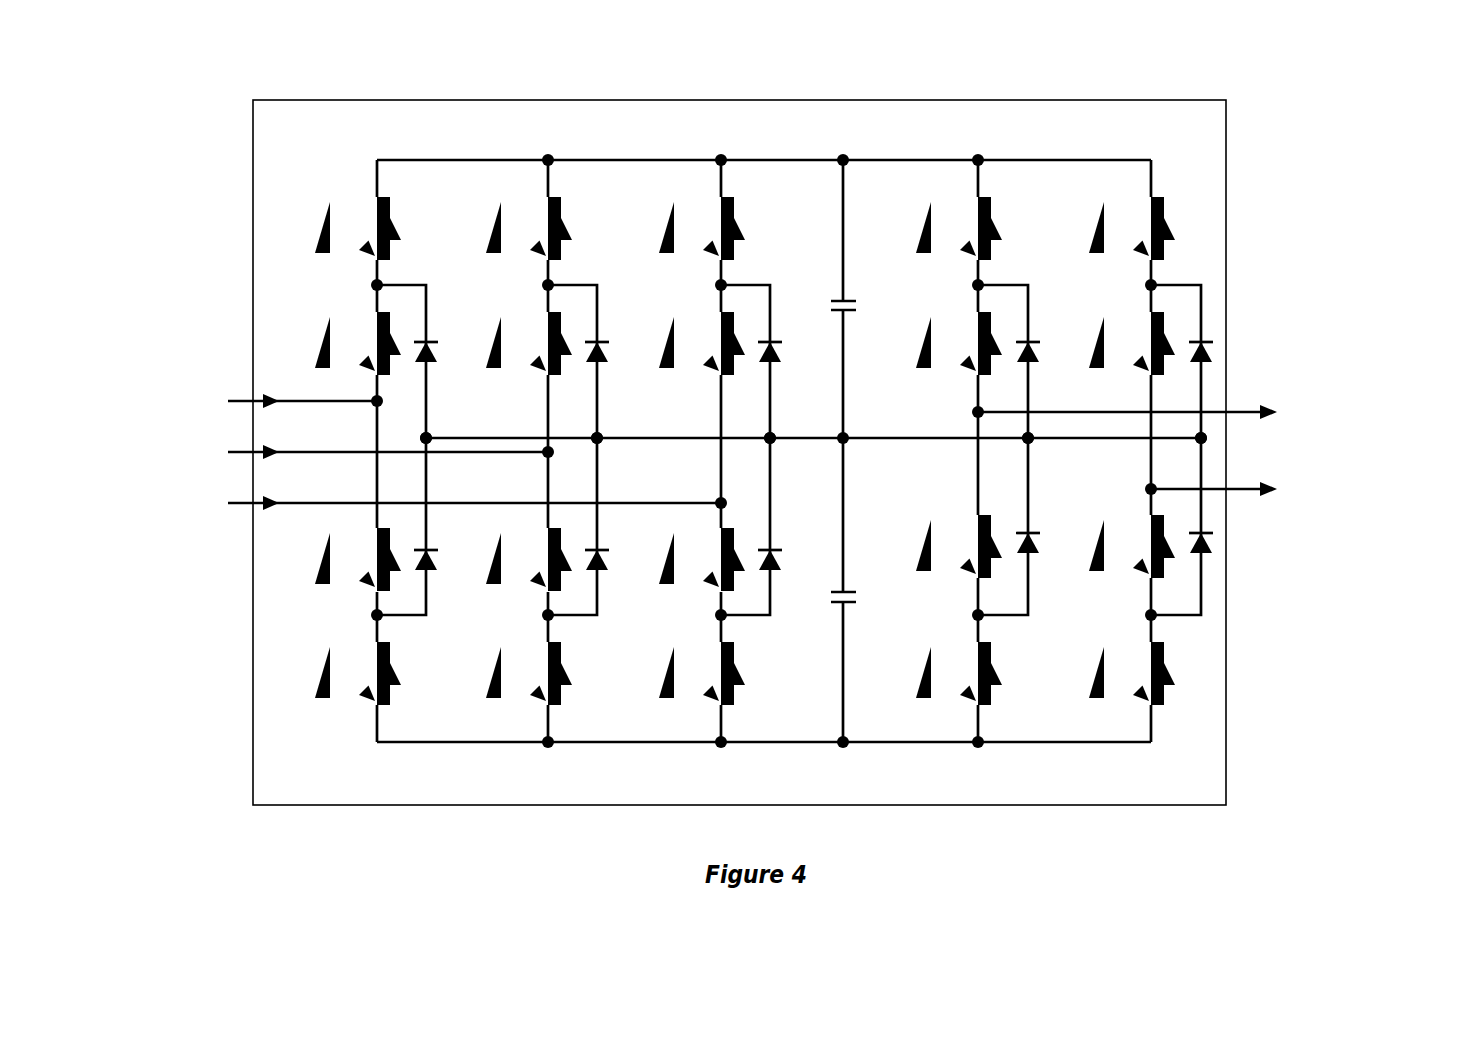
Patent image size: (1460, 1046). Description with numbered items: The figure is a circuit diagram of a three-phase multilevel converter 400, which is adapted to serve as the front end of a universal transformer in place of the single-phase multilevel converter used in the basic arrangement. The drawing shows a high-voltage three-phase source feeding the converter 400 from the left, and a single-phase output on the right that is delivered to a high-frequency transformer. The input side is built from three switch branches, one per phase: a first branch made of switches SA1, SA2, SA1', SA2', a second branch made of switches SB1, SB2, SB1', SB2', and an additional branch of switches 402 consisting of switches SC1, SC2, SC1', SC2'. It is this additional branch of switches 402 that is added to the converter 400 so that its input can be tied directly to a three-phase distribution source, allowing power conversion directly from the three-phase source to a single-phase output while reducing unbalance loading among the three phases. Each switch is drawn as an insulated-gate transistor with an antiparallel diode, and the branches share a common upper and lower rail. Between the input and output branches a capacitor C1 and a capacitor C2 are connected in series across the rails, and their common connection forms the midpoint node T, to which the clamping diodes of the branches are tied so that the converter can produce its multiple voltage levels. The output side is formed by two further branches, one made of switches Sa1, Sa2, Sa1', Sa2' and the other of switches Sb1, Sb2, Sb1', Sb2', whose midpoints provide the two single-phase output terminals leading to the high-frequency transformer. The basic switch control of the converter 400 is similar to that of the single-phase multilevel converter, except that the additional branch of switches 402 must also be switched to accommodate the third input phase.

The three-phase multilevel converter 400 is at (1190, 130).
The additional branch of switches 402 is at (752, 127).
The DC link capacitor C1 is at (828, 299).
The DC link capacitor C2 is at (832, 590).
The neutral point / midpoint node T is at (814, 458).
The IGBT switch S_A1 SA1 is at (347, 230).
The IGBT switch S_A2 SA2 is at (347, 345).
The IGBT switch S_A1' SA1' is at (347, 561).
The IGBT switch S_A2' SA2' is at (347, 675).
The IGBT switch S_B1 SB1 is at (519, 230).
The IGBT switch S_B2 SB2 is at (519, 345).
The IGBT switch S_B1' SB1' is at (519, 561).
The IGBT switch S_B2' SB2' is at (519, 675).
The switch SC1 is at (693, 230).
The switch SC2 is at (693, 345).
The switch SC1' is at (693, 561).
The switch SC2' is at (693, 675).
The IGBT switch S_a1 Sa1 is at (948, 230).
The IGBT switch S_a2 Sa2 is at (948, 345).
The IGBT switch S_a1' Sa1' is at (948, 548).
The IGBT switch S_a2' Sa2' is at (948, 675).
The IGBT switch S_b1 Sb1 is at (1121, 230).
The IGBT switch S_b2 Sb2 is at (1121, 345).
The IGBT switch S_b1' Sb1' is at (1121, 548).
The IGBT switch S_b2' Sb2' is at (1121, 675).